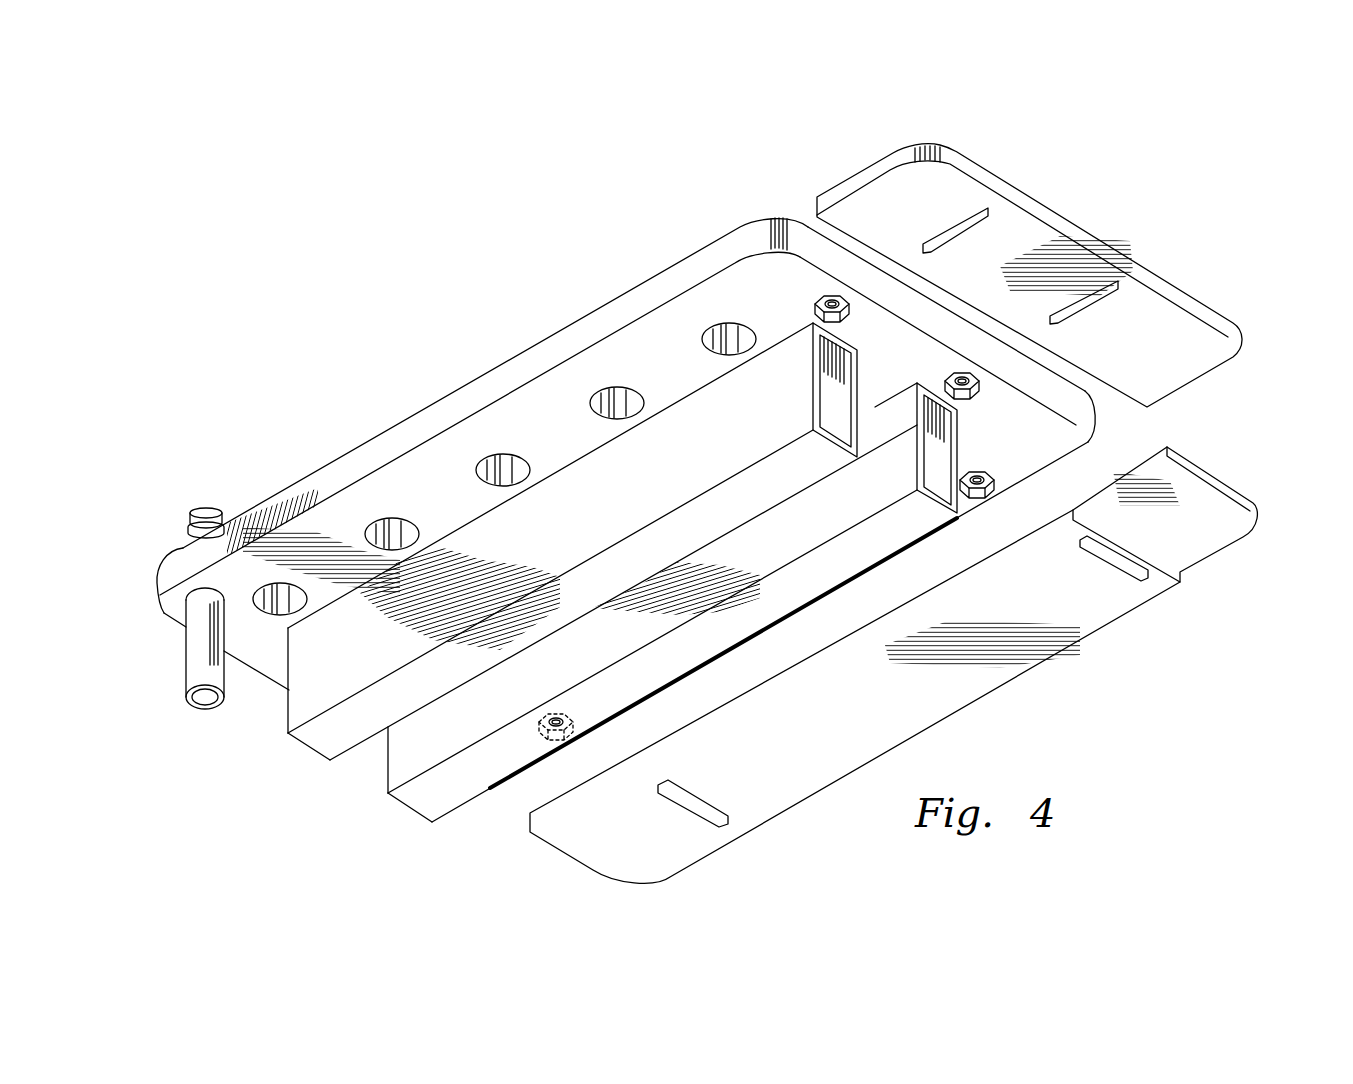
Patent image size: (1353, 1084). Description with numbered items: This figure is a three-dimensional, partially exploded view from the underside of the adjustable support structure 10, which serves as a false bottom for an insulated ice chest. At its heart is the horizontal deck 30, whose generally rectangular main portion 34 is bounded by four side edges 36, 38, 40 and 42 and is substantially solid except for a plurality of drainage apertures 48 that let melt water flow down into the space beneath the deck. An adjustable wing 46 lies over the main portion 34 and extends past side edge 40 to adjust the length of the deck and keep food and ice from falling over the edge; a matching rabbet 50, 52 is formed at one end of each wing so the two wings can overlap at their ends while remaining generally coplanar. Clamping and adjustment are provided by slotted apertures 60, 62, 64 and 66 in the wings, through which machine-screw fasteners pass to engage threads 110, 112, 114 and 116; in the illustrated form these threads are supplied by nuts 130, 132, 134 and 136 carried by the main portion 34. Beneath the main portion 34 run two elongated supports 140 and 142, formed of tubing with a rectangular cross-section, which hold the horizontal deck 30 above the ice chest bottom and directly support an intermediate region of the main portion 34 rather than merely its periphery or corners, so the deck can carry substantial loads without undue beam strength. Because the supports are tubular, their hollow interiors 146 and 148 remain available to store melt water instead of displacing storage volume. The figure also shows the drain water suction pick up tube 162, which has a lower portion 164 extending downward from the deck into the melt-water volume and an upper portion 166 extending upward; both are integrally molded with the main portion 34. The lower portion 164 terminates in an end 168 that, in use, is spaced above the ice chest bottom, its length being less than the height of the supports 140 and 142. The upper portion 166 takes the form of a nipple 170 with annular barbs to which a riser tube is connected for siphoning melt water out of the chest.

The adjustable support structure 10 is at (306, 326).
The horizontal deck 30 is at (1262, 397).
The main portion 34 is at (650, 335).
The side edge 36 is at (270, 690).
The side edge 38 is at (1037, 477).
The side edge 40 is at (823, 247).
The side edge 42 is at (430, 418).
The adjustable wing 46 is at (1050, 267).
The drainage apertures 48 is at (503, 468).
The rabbet 50 is at (1195, 533).
The rabbet 52 is at (1217, 312).
The slotted aperture 60 is at (712, 793).
The slotted aperture 62 is at (1110, 565).
The slotted aperture 64 is at (1097, 308).
The slotted aperture 66 is at (945, 233).
The threads 110 is at (538, 771).
The threads 112 is at (994, 516).
The threads 114 is at (1003, 392).
The threads 116 is at (781, 271).
The nut 130 is at (535, 730).
The nut 132 is at (990, 474).
The nut 134 is at (957, 377).
The nut 136 is at (818, 300).
The support 140 is at (646, 500).
The support 142 is at (808, 547).
The hollow interior 146 is at (838, 398).
The hollow interior 148 is at (928, 457).
The drain water suction pick up tube 162 is at (156, 663).
The lower portion 164 is at (183, 683).
The upper portion 166 is at (193, 514).
The end 168 is at (200, 710).
The nipple 170 is at (217, 507).